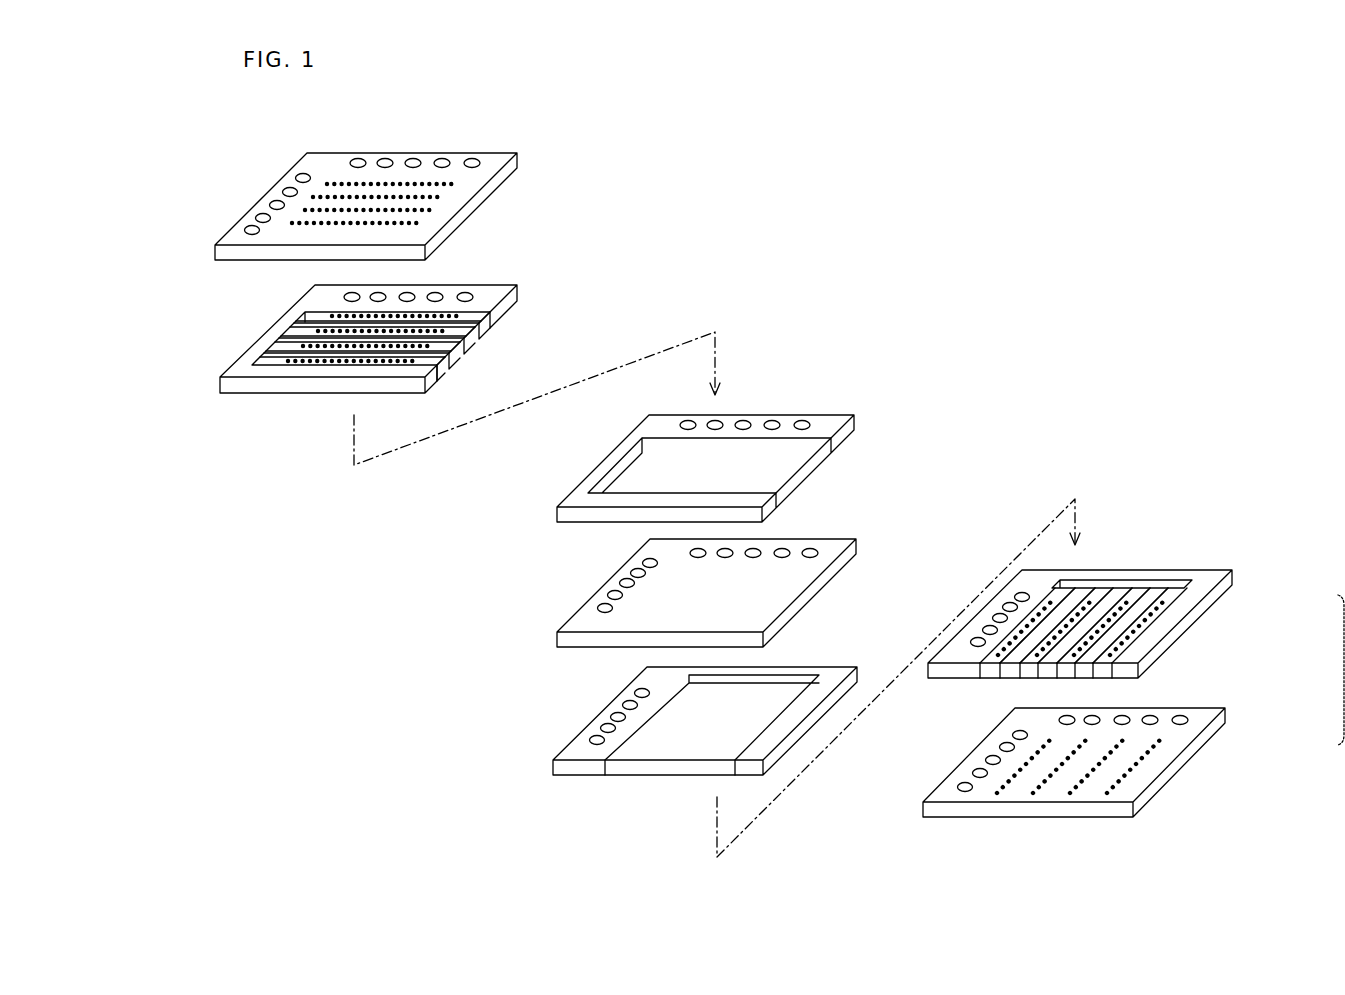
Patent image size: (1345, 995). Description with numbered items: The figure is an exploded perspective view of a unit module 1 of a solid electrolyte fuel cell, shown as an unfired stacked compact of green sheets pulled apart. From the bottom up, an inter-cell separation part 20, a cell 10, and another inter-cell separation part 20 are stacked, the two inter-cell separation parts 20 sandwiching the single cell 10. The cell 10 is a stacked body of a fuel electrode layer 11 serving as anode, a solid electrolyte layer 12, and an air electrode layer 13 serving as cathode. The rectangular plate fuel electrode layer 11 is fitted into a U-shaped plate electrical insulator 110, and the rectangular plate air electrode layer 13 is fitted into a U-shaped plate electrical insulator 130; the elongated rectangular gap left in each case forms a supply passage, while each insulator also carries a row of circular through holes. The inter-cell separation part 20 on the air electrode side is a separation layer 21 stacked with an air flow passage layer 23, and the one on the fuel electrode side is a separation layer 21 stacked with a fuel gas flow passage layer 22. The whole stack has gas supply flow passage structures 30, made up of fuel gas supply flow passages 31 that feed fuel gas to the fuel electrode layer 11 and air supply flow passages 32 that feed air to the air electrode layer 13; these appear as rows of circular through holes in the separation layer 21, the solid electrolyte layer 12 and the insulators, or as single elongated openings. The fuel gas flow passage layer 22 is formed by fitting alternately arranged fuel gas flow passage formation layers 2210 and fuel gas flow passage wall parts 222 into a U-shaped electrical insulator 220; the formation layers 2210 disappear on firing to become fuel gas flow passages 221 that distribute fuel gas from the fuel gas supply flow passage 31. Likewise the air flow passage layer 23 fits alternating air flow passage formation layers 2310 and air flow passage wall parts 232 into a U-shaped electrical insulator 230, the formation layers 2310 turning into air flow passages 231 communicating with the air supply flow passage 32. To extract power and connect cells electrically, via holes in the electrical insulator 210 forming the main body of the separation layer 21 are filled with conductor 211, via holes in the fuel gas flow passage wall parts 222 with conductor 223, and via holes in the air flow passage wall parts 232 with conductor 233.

The unit module 1 is at (919, 308).
The cell 10 is at (509, 483).
The fuel electrode layer 11 is at (643, 748).
The electrical insulator 110 is at (833, 672).
The solid electrolyte layer 12 is at (598, 600).
The air electrode layer 13 is at (643, 478).
The electrical insulator 130 is at (833, 420).
The inter-cell separation part 20 is at (147, 190).
The separation layer 21 is at (209, 212).
The electrical insulator 210 is at (497, 157).
The conductor 211 is at (458, 184).
The fuel gas flow passage layer 22 is at (1240, 614).
The electrical insulator 220 is at (1207, 578).
The fuel gas flow passages 221 is at (1136, 634).
The fuel gas flow passage formation layers 2210 is at (1082, 675).
The fuel gas flow passage wall parts 222 is at (1063, 672).
The conductor 223 is at (1147, 625).
The air flow passage layer 23 is at (209, 352).
The electrical insulator 230 is at (507, 305).
The air flow passages 231 is at (438, 338).
The air flow passage formation layers 2310 is at (483, 330).
The air flow passage wall parts 232 is at (442, 366).
The conductor 233 is at (470, 314).
The gas supply flow passage structures 30 is at (236, 118).
The fuel gas supply flow passages 31 is at (355, 160).
The air supply flow passages 32 is at (303, 177).